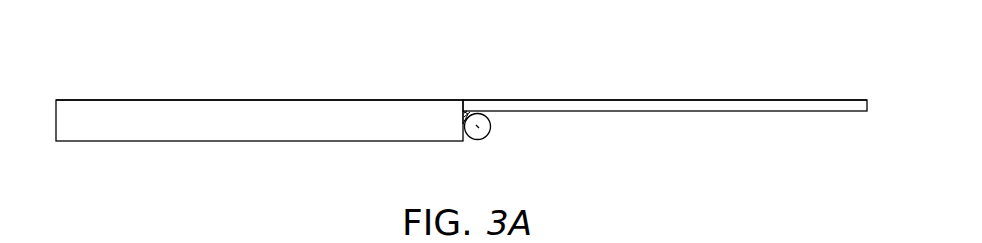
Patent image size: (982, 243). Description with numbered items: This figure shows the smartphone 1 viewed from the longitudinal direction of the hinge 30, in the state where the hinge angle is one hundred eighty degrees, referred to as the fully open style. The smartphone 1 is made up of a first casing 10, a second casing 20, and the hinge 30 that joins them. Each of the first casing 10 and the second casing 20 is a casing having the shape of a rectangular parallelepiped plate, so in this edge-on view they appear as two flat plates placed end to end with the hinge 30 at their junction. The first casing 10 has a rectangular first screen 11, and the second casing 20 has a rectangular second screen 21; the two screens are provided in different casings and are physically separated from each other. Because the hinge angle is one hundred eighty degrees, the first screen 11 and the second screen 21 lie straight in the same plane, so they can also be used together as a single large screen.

The smartphone 1 is at (718, 85).
The first casing 10 is at (290, 130).
The first screen 11 is at (225, 100).
The second casing 20 is at (679, 106).
The second screen 21 is at (617, 99).
The hinge 30 is at (488, 136).